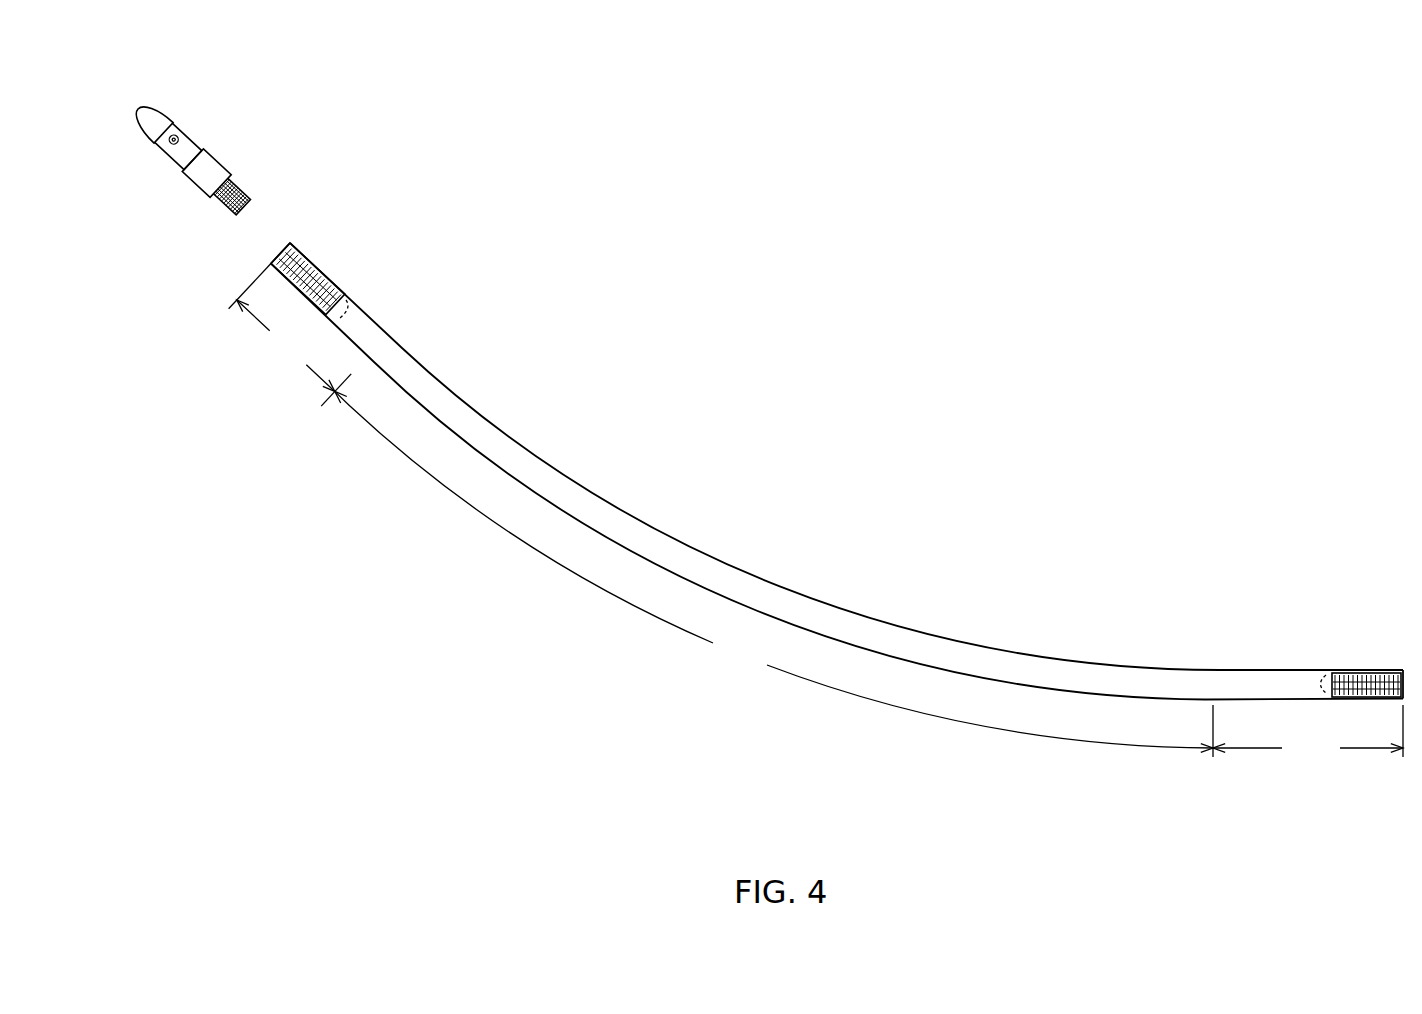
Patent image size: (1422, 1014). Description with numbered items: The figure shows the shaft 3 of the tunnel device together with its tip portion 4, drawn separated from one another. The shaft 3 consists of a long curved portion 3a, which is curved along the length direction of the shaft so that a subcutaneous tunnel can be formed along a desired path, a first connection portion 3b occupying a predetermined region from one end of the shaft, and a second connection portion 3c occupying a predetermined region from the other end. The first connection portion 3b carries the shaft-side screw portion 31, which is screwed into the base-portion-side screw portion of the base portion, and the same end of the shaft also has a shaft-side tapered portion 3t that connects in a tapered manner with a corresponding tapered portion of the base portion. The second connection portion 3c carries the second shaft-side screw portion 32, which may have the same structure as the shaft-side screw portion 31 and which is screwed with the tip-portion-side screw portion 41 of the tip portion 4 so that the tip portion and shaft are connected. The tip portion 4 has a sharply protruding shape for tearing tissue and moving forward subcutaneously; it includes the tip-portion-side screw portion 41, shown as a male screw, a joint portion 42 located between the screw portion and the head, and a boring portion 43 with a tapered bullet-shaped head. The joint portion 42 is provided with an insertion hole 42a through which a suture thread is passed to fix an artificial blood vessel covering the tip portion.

The shaft 3 is at (813, 530).
The curved portion 3a is at (774, 571).
The first connection portion 3b is at (1308, 736).
The second connection portion 3c is at (290, 335).
The shaft-side tapered portion 3t is at (1404, 669).
The shaft-side screw portion 31 is at (1410, 683).
The second shaft-side screw portion 32 is at (282, 242).
The tip portion 4 is at (242, 158).
The tip-portion-side screw portion 41 is at (250, 187).
The joint portion 42 is at (183, 153).
The insertion hole 42a is at (160, 142).
The boring portion 43 is at (152, 118).